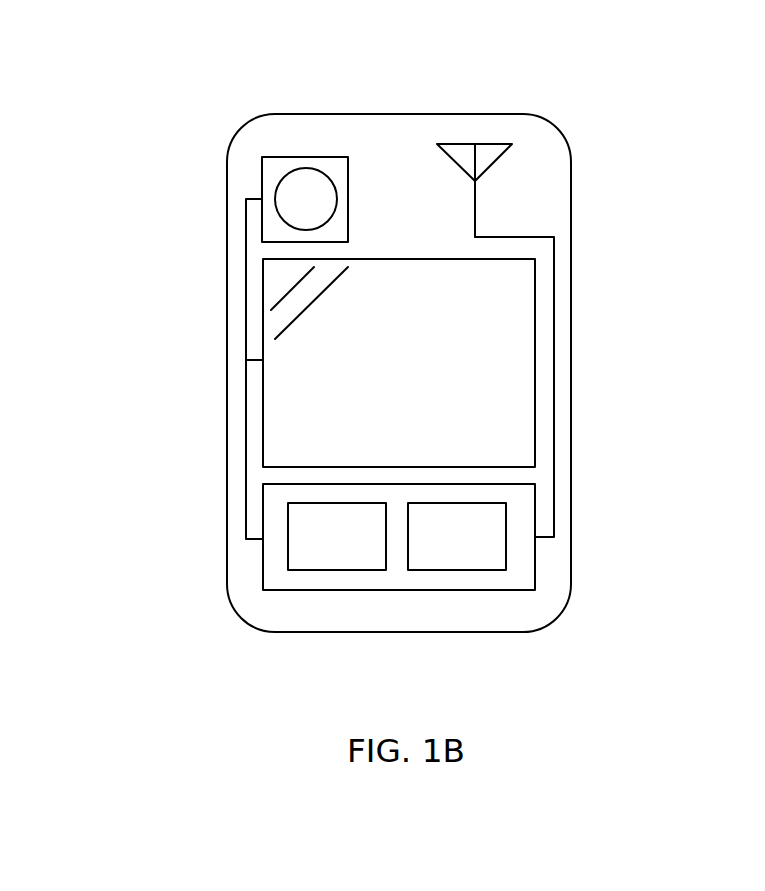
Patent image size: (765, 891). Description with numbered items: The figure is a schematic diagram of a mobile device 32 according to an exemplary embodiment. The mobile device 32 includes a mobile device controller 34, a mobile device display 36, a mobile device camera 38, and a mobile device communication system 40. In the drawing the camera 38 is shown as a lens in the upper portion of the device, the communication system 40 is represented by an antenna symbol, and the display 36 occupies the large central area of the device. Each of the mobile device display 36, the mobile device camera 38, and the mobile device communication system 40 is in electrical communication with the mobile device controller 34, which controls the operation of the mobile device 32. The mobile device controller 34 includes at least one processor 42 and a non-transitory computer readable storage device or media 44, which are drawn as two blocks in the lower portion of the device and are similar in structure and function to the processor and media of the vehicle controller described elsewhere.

The mobile device 32 is at (229, 124).
The mobile device controller 34 is at (523, 592).
The mobile device display 36 is at (412, 374).
The mobile device camera 38 is at (275, 157).
The mobile device communication system 40 is at (503, 145).
The processor 42 is at (350, 549).
The non-transitory computer readable storage device or media 44 is at (470, 549).